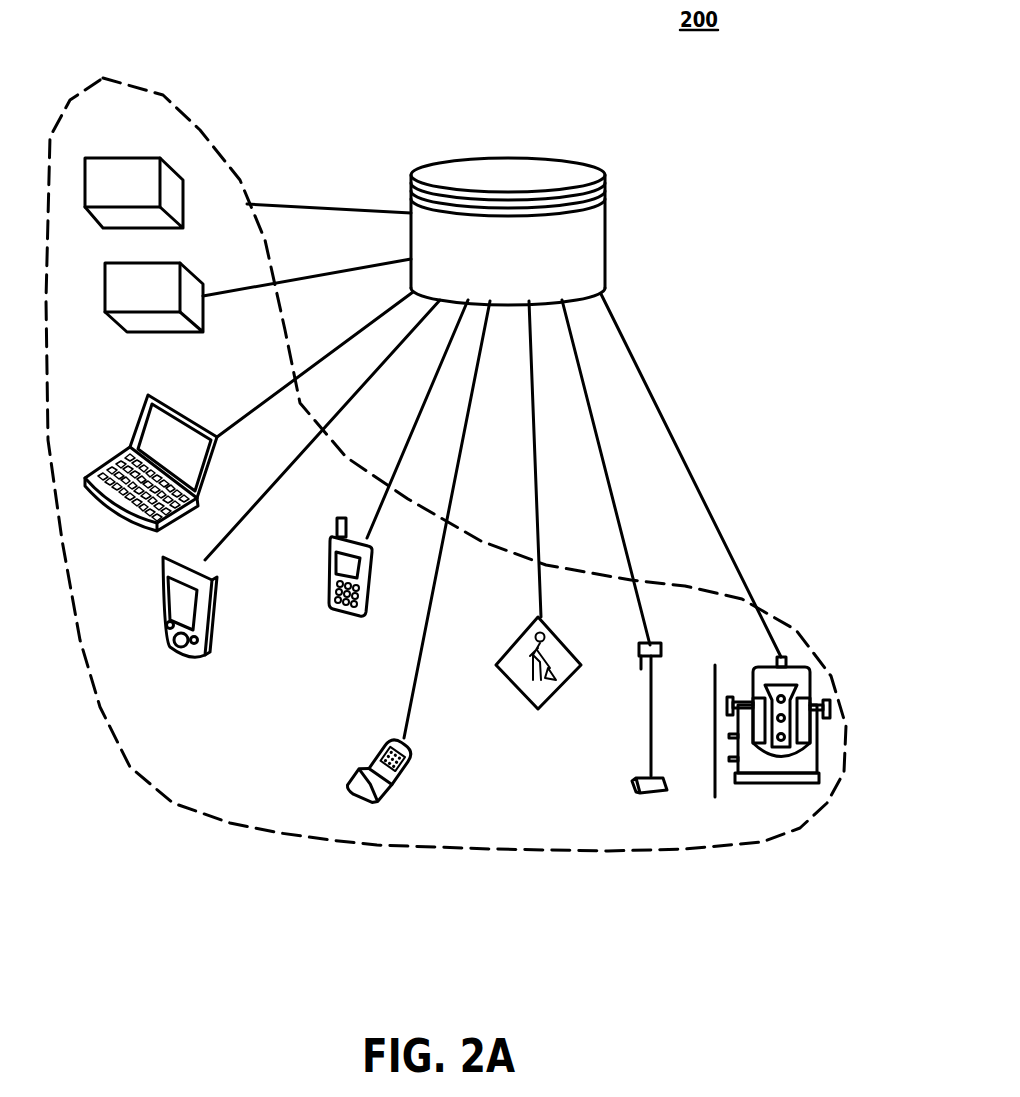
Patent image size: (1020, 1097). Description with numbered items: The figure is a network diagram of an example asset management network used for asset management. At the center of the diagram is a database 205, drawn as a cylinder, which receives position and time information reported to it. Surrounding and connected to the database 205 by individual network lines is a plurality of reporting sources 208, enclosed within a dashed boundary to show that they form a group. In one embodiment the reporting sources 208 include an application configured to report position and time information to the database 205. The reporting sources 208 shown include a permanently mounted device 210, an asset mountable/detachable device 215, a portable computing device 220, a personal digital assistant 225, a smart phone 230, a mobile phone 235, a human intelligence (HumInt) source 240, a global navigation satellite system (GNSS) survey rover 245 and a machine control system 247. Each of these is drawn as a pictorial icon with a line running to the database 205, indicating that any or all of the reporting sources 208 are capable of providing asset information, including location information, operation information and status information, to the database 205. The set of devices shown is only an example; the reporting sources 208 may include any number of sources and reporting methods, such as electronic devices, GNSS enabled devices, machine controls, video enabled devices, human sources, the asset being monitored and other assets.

The database 205 is at (545, 158).
The plurality of reporting sources 208 is at (165, 95).
The permanently mounted device 210 is at (86, 157).
The asset mountable/detachable device 215 is at (143, 336).
The portable computing device 220 is at (153, 526).
The personal digital assistant 225 is at (175, 647).
The smart phone 230 is at (362, 617).
The mobile phone 235 is at (358, 810).
The human intelligence (HumInt) 240 is at (534, 706).
The global navigation satellite system (GNSS) survey rover 245 is at (652, 797).
The machine control system 247 is at (808, 783).